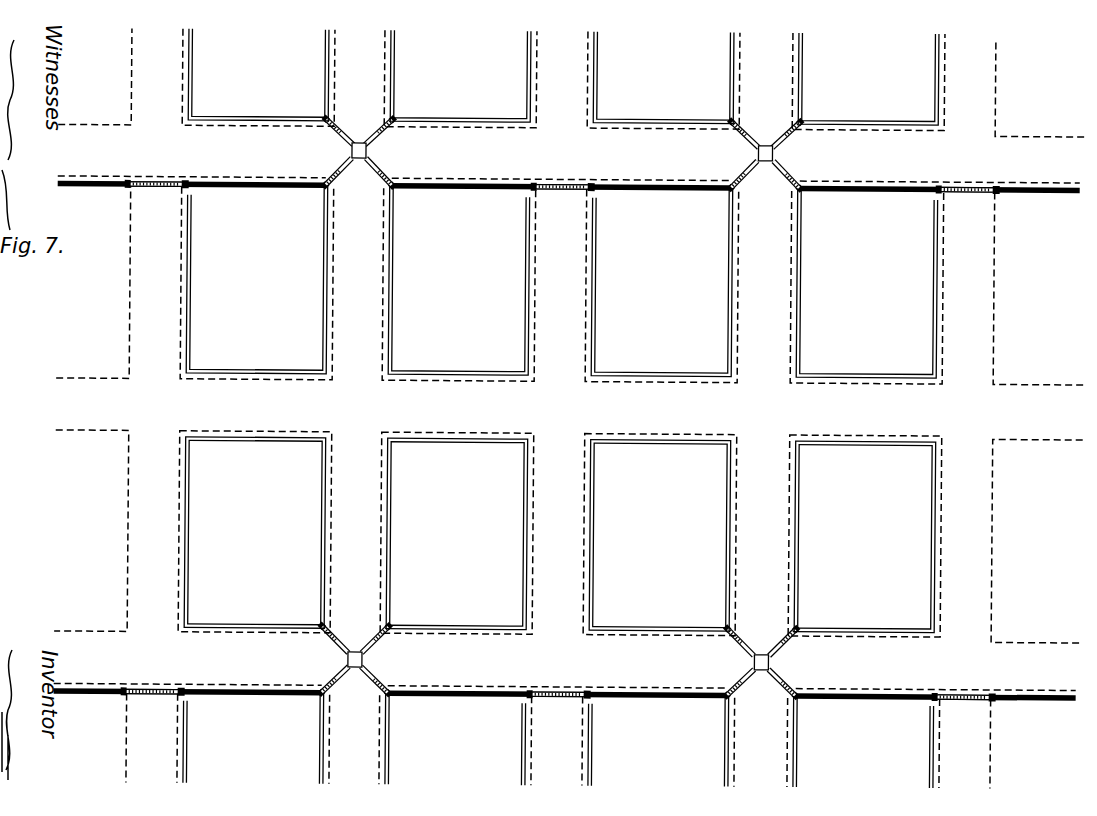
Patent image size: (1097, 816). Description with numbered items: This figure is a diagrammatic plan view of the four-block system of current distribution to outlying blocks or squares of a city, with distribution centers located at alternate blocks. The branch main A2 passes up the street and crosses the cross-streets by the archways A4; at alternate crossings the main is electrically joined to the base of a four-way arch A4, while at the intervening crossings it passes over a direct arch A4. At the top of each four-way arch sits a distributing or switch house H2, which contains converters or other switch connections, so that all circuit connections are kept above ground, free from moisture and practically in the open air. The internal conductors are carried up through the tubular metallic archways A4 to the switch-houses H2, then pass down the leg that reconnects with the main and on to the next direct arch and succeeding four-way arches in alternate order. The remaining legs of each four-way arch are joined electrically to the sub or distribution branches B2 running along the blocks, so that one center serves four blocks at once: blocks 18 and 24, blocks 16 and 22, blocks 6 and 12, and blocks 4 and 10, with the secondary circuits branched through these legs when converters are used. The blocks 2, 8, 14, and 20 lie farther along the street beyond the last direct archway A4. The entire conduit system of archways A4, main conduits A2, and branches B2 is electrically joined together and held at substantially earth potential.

The block 2 is at (1020, 743).
The block 4 is at (761, 742).
The block 6 is at (354, 739).
The block 8 is at (1037, 541).
The block 10 is at (762, 535).
The block 12 is at (356, 532).
The block 14 is at (1039, 288).
The block 16 is at (764, 287).
The block 18 is at (358, 284).
The block 20 is at (1040, 89).
The block 22 is at (766, 81).
The block 24 is at (359, 78).
The branch main A2 is at (1044, 689).
The archway A4 is at (787, 674).
The sub or distribution branch B2 is at (802, 735).
The switch-house H2 is at (763, 652).